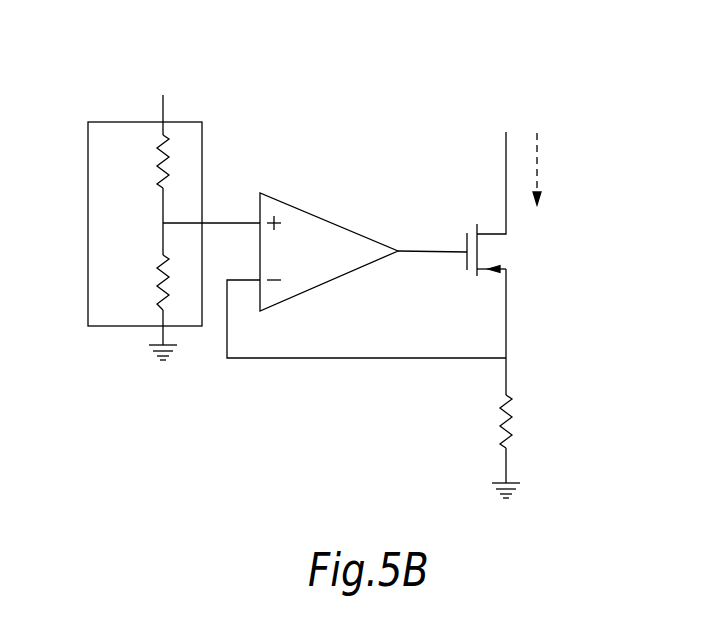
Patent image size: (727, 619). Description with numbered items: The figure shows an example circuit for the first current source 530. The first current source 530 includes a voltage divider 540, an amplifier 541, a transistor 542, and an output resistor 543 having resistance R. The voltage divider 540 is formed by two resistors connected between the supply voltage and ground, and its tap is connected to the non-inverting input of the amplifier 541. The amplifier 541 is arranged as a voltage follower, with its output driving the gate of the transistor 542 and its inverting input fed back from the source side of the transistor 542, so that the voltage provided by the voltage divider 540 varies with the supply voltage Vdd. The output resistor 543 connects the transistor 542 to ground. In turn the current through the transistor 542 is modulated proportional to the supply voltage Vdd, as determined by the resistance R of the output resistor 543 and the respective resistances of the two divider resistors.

The first current source 530 is at (621, 44).
The voltage divider 540 is at (87, 222).
The amplifier 541 is at (330, 222).
The transistor 542 is at (478, 253).
The output resistor 543 is at (516, 427).